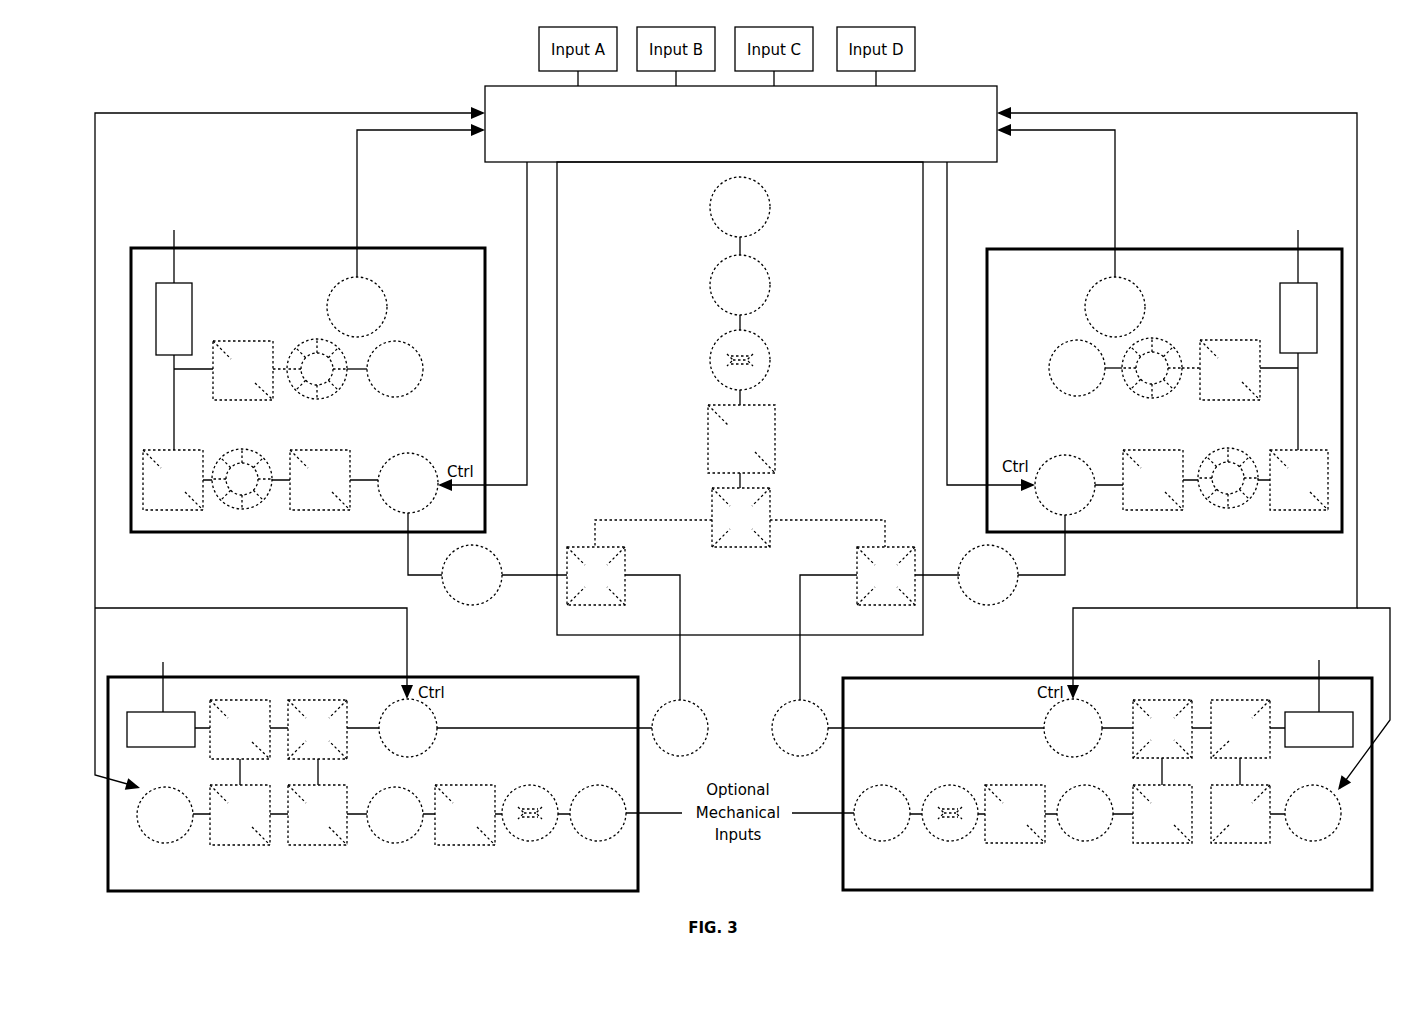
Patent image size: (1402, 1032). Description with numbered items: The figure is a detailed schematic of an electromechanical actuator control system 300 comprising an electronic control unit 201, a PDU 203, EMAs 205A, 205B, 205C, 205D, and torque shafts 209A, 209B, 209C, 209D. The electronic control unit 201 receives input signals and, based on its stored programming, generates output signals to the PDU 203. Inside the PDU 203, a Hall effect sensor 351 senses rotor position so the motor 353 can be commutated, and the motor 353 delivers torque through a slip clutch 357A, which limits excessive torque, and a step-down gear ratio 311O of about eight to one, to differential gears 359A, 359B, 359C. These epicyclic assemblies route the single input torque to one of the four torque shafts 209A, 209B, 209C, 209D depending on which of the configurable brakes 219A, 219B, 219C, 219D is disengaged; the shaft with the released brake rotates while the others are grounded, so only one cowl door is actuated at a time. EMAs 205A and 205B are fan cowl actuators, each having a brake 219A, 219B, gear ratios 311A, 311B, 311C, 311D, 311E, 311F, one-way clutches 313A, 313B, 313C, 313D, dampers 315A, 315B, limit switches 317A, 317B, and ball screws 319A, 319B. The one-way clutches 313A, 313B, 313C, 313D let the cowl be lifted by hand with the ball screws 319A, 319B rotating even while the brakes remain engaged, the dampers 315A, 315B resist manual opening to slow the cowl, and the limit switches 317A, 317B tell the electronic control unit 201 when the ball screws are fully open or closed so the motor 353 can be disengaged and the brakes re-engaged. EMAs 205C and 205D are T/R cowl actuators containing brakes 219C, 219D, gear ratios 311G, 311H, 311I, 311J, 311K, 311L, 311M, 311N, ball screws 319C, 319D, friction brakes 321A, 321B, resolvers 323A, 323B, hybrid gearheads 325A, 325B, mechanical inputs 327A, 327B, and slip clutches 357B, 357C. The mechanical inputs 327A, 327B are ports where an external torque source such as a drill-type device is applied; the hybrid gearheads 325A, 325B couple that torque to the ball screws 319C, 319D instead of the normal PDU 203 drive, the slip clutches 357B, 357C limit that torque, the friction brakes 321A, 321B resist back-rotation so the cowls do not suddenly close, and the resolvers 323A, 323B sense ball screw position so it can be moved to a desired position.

The control system 300 is at (235, 92).
The electronic control unit 201 is at (741, 124).
The PDU 203 is at (740, 398).
The EMA 205A is at (308, 370).
The EMA 205B is at (1164, 370).
The EMA 205C is at (373, 766).
The EMA 205D is at (1107, 764).
The torque shaft 209A is at (472, 575).
The torque shaft 209B is at (988, 575).
The torque shaft 209C is at (680, 728).
The torque shaft 209D is at (800, 728).
The configurable brake 219A is at (408, 483).
The configurable brake 219B is at (1065, 485).
The brake 219C is at (408, 728).
The brake 219D is at (1073, 728).
The gear ratio 311A is at (320, 480).
The gear ratio 311B is at (173, 480).
The gear ratio 311C is at (243, 370).
The gear ratio 311D is at (1153, 480).
The gear ratio 311E is at (1299, 480).
The gear ratio 311F is at (1230, 370).
The gear ratio 311G is at (240, 729).
The gear ratio 311H is at (240, 815).
The gear ratio 311I is at (317, 815).
The gear ratio 311J is at (465, 815).
The gear ratio 311K is at (1240, 729).
The gear ratio 311L is at (1015, 814).
The gear ratio 311M is at (1162, 814).
The gear ratio 311N is at (1240, 814).
The gear ratio 311O is at (741, 439).
The one-way clutch 313A is at (248, 448).
The one-way clutch 313B is at (345, 380).
The one-way clutch 313C is at (1227, 449).
The one-way clutch 313D is at (1130, 384).
The damper 315A is at (395, 369).
The damper 315B is at (1077, 368).
The limit switch 317A is at (357, 307).
The limit switch 317B is at (1115, 307).
The ball screw 319A is at (174, 319).
The ball screw 319B is at (1298, 318).
The ball screw 319C is at (161, 729).
The ball screw 319D is at (1319, 729).
The friction brake 321A is at (395, 815).
The friction brake 321B is at (1085, 813).
The resolver 323A is at (165, 815).
The resolver 323B is at (1313, 813).
The hybrid gearhead 325A is at (317, 729).
The hybrid gearhead 325B is at (1162, 729).
The mechanical input 327A is at (598, 813).
The mechanical input 327B is at (882, 813).
The Hall effect sensor 351 is at (740, 207).
The motor 353 is at (740, 285).
The slip clutch 357A is at (800, 343).
The slip clutch 357B is at (530, 783).
The slip clutch 357C is at (955, 785).
The differential gear 359A is at (741, 517).
The differential gear 359B is at (596, 576).
The differential gear 359C is at (886, 576).